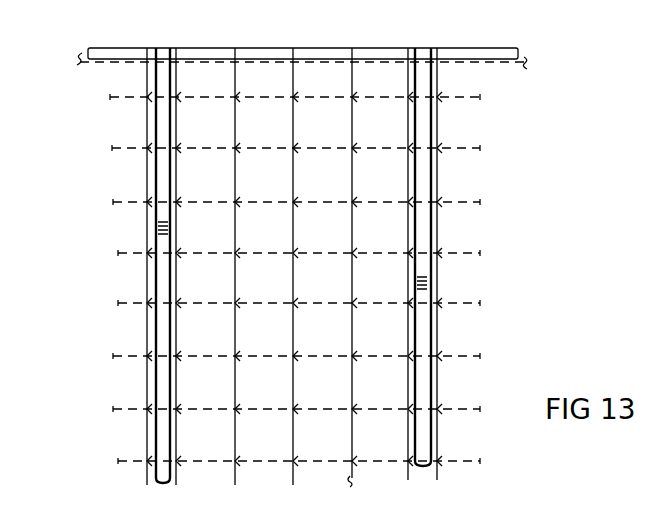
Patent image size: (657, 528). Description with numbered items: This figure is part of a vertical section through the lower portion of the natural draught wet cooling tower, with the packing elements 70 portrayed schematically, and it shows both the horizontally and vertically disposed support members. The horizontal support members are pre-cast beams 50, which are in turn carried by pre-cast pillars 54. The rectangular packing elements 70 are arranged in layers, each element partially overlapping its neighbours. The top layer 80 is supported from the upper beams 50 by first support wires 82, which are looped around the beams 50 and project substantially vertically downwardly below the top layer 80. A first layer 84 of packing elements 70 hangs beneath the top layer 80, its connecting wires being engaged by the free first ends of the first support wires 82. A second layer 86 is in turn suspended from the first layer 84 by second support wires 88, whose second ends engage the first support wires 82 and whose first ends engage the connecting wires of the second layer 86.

The pre-cast beam 50 is at (473, 52).
The pre-cast pillar 54 is at (423, 238).
The packing element 70 is at (394, 349).
The top layer 80 is at (70, 67).
The first support wire 82 is at (237, 78).
The first layer 84 is at (99, 102).
The second layer 86 is at (108, 246).
The second support wire 88 is at (352, 134).